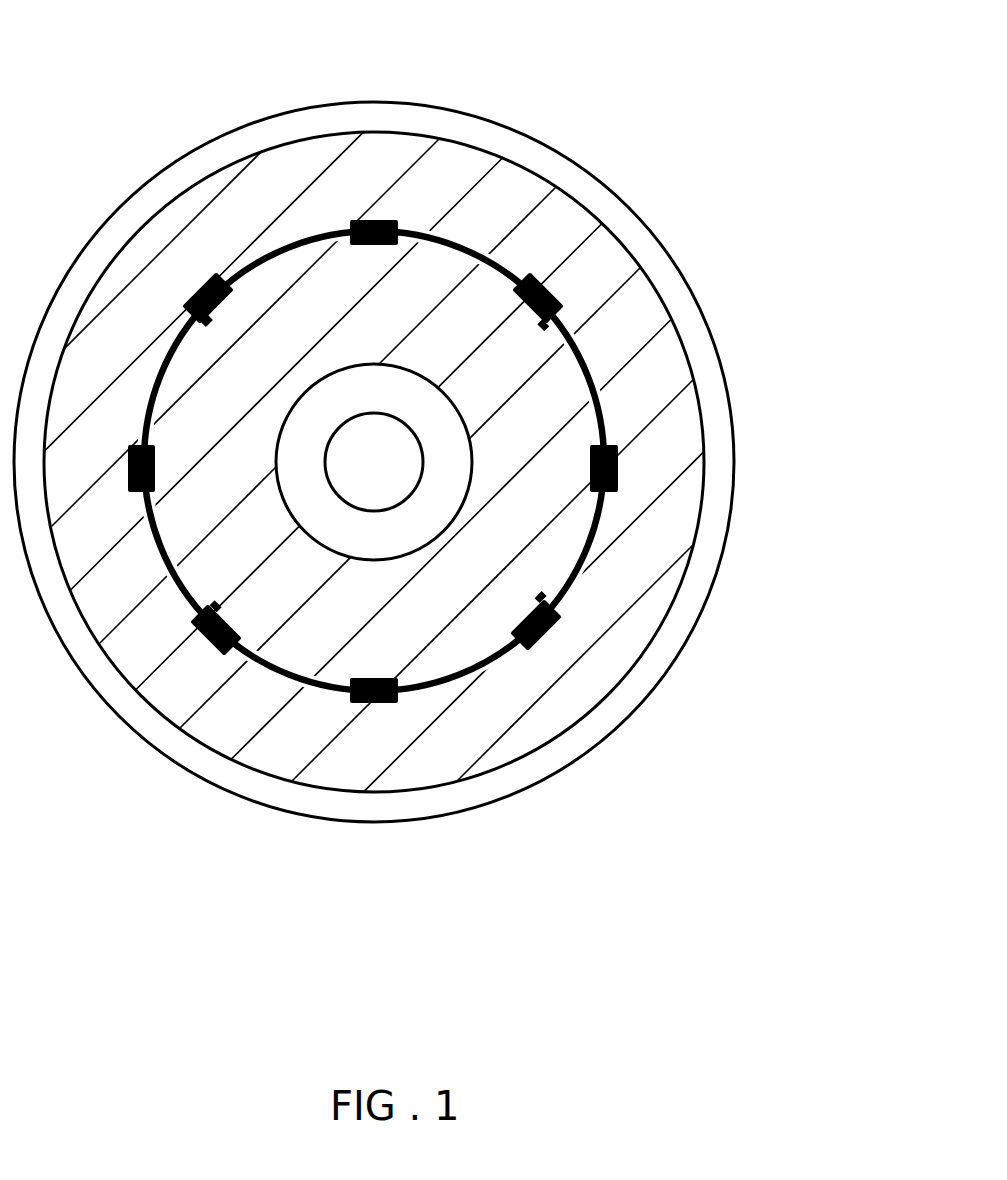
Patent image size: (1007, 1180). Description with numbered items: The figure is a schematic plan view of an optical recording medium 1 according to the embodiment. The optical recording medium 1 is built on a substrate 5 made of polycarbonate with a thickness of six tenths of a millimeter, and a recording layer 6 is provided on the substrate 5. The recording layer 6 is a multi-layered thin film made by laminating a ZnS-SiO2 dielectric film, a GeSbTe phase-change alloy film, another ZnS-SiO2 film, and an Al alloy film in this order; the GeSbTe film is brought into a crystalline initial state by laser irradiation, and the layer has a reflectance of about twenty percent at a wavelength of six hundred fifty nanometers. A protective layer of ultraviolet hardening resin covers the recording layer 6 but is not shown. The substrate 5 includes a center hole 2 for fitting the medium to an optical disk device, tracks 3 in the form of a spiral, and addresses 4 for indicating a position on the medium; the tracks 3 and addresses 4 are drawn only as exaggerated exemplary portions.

The optical recording medium 1 is at (447, 496).
The center hole 2 is at (338, 497).
The tracks 3 is at (443, 683).
The address 4 is at (543, 630).
The substrate 5 is at (733, 518).
The recording layer 6 is at (655, 385).